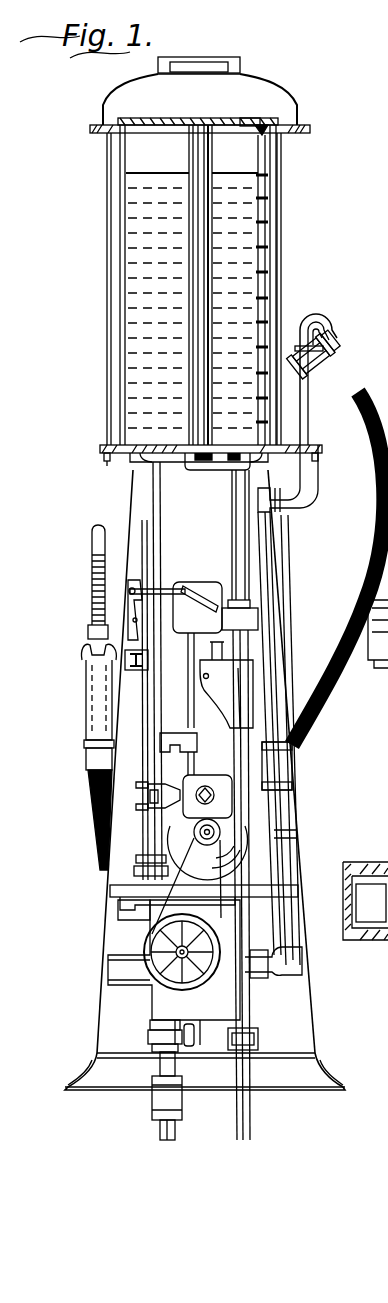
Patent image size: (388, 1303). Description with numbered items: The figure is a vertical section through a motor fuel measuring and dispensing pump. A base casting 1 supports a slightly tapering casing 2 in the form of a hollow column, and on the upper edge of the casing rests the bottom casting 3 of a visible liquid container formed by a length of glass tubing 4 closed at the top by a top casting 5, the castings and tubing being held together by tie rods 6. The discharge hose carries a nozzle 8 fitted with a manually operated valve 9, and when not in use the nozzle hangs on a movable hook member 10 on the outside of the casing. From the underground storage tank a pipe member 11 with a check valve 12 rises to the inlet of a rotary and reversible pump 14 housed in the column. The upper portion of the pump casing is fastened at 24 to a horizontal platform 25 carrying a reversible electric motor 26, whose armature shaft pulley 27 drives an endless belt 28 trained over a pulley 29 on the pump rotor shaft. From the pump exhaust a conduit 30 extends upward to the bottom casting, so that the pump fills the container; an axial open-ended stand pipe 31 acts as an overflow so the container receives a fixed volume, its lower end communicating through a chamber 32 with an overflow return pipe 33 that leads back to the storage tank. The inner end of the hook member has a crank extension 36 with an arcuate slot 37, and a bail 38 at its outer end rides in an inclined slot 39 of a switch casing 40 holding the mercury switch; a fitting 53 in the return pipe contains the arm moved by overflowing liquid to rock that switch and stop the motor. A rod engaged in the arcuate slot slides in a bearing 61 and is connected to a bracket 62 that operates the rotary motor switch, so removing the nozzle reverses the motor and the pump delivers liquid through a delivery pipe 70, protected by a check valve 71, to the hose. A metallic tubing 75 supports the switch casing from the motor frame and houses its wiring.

The base casting 1 is at (325, 1072).
The casing 2 is at (312, 976).
The bottom casting 3 is at (130, 460).
The glass tubing 4 is at (278, 261).
The top casting 5 is at (292, 134).
The tie rods 6 is at (108, 320).
The nozzle 8 is at (90, 621).
The manually operated valve 9 is at (90, 687).
The hook member 10 is at (85, 651).
The pipe member 11 is at (158, 1134).
The check valve 12 is at (155, 1103).
The rotary and reversible pump 14 is at (387, 776).
The fastening 24 is at (378, 642).
The horizontal platform 25 is at (110, 890).
The reversible electric motor 26 is at (240, 840).
The pulley 27 is at (220, 831).
The endless belt 28 is at (160, 912).
The pulley 29 is at (144, 948).
The conduit 30 is at (160, 551).
The stand pipe 31 is at (193, 366).
The chamber 32 is at (220, 459).
The overflow return pipe 33 is at (230, 514).
The crank extension 36 is at (146, 590).
The arcuate slot 37 is at (150, 608).
The bail 38 is at (176, 586).
The inclined slot 39 is at (203, 596).
The switch casing 40 is at (255, 606).
The fitting 53 is at (248, 666).
The bearing 61 is at (148, 663).
The bracket 62 is at (177, 799).
The delivery pipe 70 is at (283, 866).
The check valve 71 is at (287, 761).
The metallic tubing 75 is at (190, 697).